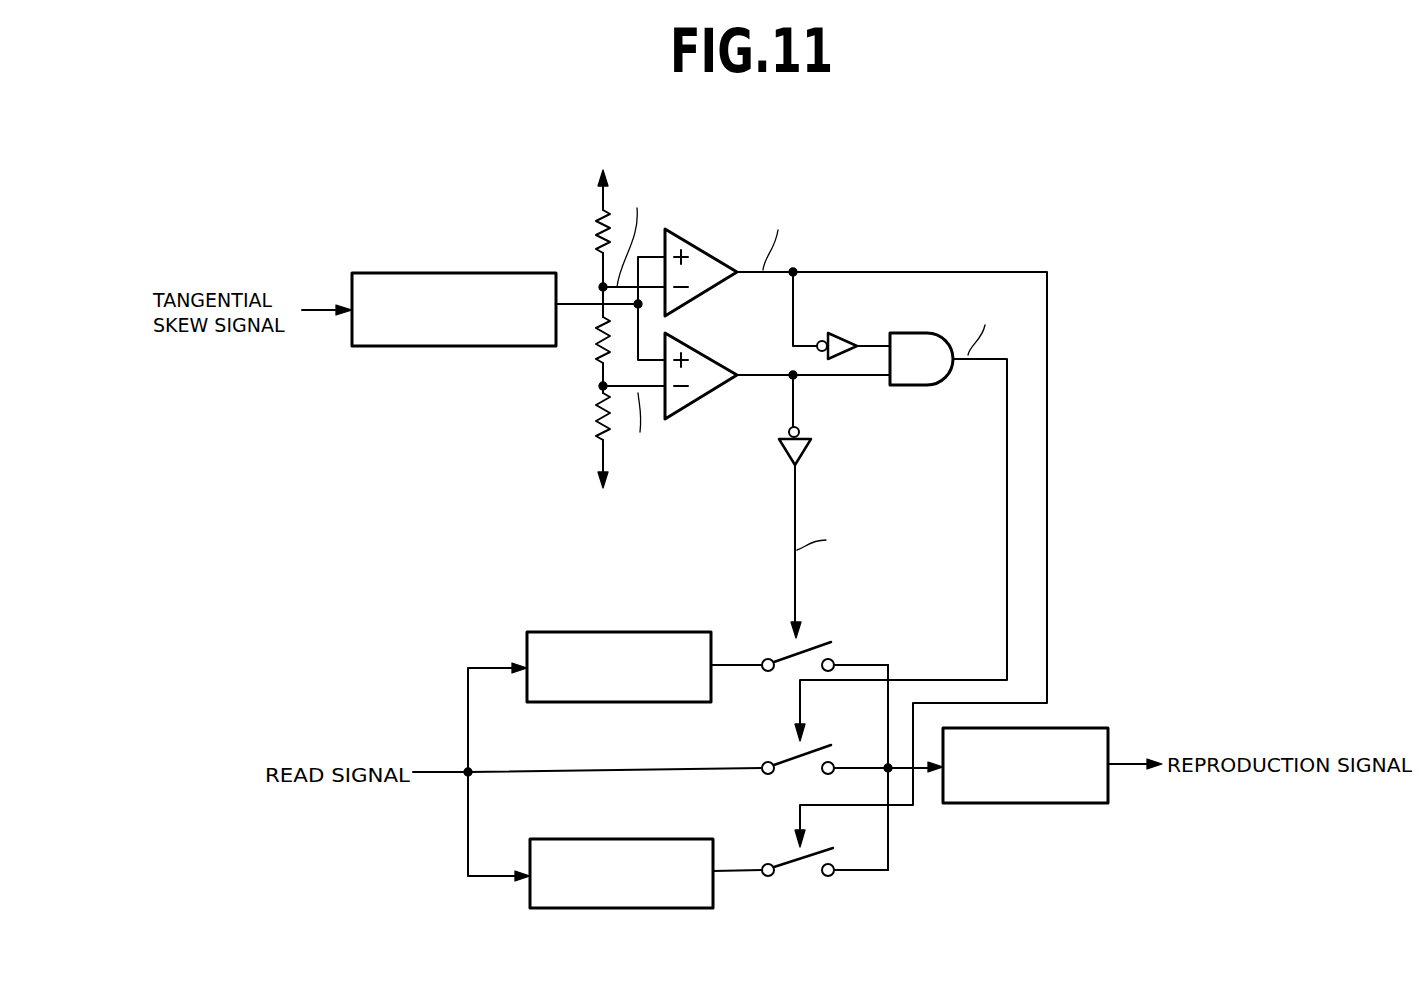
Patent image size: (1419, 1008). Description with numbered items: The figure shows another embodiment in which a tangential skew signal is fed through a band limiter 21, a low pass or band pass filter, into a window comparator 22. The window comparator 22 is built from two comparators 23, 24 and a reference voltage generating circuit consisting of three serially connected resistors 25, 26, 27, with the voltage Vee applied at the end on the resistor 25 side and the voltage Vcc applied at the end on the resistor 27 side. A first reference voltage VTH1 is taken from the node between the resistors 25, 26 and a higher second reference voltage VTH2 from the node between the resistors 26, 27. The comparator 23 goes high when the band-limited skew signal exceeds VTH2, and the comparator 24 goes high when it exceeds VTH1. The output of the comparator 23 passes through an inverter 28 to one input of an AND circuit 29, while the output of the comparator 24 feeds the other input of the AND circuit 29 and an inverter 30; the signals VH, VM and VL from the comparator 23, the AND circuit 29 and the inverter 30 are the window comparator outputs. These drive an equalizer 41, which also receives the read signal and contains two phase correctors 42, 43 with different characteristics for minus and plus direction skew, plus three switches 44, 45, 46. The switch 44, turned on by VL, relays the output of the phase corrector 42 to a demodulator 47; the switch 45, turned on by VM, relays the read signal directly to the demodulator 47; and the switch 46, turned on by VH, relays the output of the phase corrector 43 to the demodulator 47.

The band limiter 21 is at (385, 348).
The window comparator 22 is at (833, 236).
The comparator 23 is at (706, 248).
The comparator 24 is at (720, 392).
The resistor 25 is at (597, 420).
The resistor 26 is at (600, 350).
The resistor 27 is at (597, 240).
The inverter 28 is at (840, 334).
The AND circuit 29 is at (930, 388).
The inverter 30 is at (804, 458).
The equalizer 41 is at (899, 641).
The phase corrector 42 is at (677, 630).
The phase corrector 43 is at (672, 838).
The switch 44 is at (815, 642).
The switch 45 is at (790, 756).
The switch 46 is at (792, 862).
The demodulator 47 is at (985, 806).